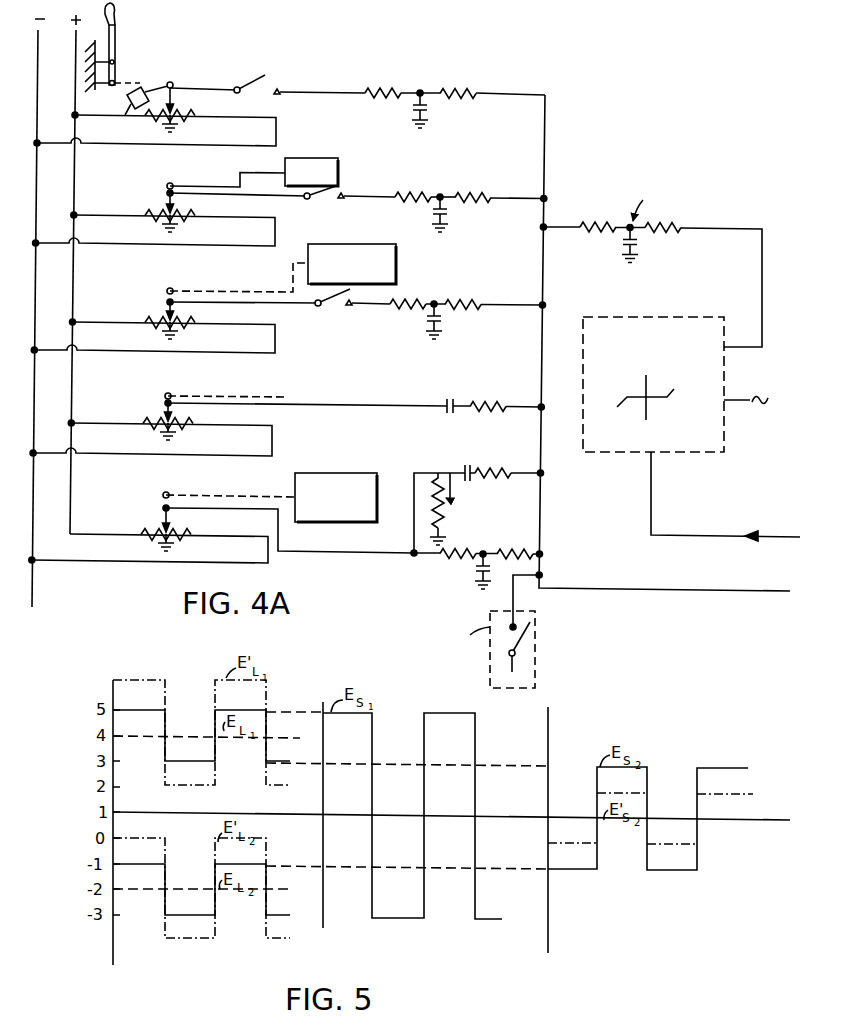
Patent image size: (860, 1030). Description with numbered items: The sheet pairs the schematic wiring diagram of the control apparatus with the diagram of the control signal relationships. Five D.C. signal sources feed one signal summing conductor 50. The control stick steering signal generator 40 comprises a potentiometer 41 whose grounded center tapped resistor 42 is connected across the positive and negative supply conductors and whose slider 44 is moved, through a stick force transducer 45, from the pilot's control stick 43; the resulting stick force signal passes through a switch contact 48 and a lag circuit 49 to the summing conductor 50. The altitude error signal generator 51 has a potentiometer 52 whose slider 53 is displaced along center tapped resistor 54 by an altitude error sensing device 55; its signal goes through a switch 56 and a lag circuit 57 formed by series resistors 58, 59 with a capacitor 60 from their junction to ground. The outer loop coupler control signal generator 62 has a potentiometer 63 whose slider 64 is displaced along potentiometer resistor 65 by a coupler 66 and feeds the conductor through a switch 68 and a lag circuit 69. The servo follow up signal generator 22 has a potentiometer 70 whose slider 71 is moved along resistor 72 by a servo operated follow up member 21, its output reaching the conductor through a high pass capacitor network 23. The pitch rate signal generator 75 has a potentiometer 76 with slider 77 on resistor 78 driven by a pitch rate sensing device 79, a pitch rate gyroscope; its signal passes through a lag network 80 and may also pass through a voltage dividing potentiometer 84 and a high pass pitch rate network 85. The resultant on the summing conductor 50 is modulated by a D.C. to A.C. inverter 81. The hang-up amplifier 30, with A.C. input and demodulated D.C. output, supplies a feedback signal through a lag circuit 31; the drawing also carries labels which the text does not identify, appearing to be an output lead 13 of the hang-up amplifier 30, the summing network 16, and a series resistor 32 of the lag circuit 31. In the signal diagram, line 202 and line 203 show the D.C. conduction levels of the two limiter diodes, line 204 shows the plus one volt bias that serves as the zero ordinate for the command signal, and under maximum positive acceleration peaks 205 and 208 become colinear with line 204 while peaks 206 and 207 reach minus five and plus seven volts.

In FIG. 4A, the output lead to control surface servo 13 is at (651, 490).
In FIG. 4A, the summing network 16 is at (603, 123).
In FIG. 4A, the servo operated follow up member 21 is at (206, 396).
In FIG. 4A, the servo follow up signal generator 22 is at (108, 398).
In FIG. 4A, the high pass capacitor network 23 is at (451, 416).
In FIG. 4A, the hang-up amplifier 30 is at (645, 316).
In FIG. 4A, the lag circuit 31 is at (650, 243).
In FIG. 4A, the large time constant resistor 32 is at (569, 230).
In FIG. 4A, the control stick steering signal generator 40 is at (105, 110).
In FIG. 4A, the potentiometer 41 is at (213, 93).
In FIG. 4A, the resistor 42 is at (150, 121).
In FIG. 4A, the control stick 43 is at (117, 20).
In FIG. 4A, the slider 44 is at (174, 103).
In FIG. 4A, the stick force transducer 45 is at (143, 90).
In FIG. 4A, the switch contact 48 is at (278, 96).
In FIG. 4A, the lag circuit 49 is at (410, 110).
In FIG. 4A, the signal summing conductor 50 is at (545, 131).
In FIG. 4A, the altitude error signal generator 51 is at (108, 187).
In FIG. 4A, the potentiometer 52 is at (150, 207).
In FIG. 4A, the slider 53 is at (166, 187).
In FIG. 4A, the resistor 54 is at (190, 219).
In FIG. 4A, the altitude error sensing device 55 is at (315, 158).
In FIG. 4A, the switch 56 is at (326, 199).
In FIG. 4A, the lag circuit 57 is at (430, 204).
In FIG. 4A, the resistor 58 is at (412, 194).
In FIG. 4A, the resistor 59 is at (477, 194).
In FIG. 4A, the capacitor 60 is at (450, 208).
In FIG. 4A, the outer loop coupler control signal generator 62 is at (108, 291).
In FIG. 4A, the potentiometer 63 is at (155, 316).
In FIG. 4A, the slider 64 is at (165, 296).
In FIG. 4A, the potentiometer resistor 65 is at (188, 327).
In FIG. 4A, the coupler 66 is at (398, 266).
In FIG. 4A, the switch 68 is at (332, 306).
In FIG. 4A, the lag circuit 69 is at (445, 314).
In FIG. 4A, the potentiometer 70 is at (157, 417).
In FIG. 4A, the slider 71 is at (176, 405).
In FIG. 4A, the resistor 72 is at (190, 428).
In FIG. 4A, the craft pitch rate signal generator 75 is at (110, 493).
In FIG. 4A, the potentiometer 76 is at (150, 526).
In FIG. 4A, the slider 77 is at (163, 497).
In FIG. 4A, the resistor 78 is at (185, 540).
In FIG. 4A, the pitch rate sensing device 79 is at (350, 474).
In FIG. 4A, the lag network 80 is at (466, 568).
In FIG. 4A, the D.C. to A.C. inverter 81 is at (535, 632).
In FIG. 4A, the voltage dividing potentiometer 84 is at (447, 476).
In FIG. 4A, the high pass pitch rate network 85 is at (472, 483).
In FIG. 5, the line 202 is at (155, 732).
In FIG. 5, the line 203 is at (159, 891).
In FIG. 5, the line 204 is at (166, 810).
In FIG. 5, the peak 205 is at (163, 706).
In FIG. 5, the peak 206 is at (159, 866).
In FIG. 5, the peak 207 is at (208, 759).
In FIG. 5, the peak 208 is at (208, 912).